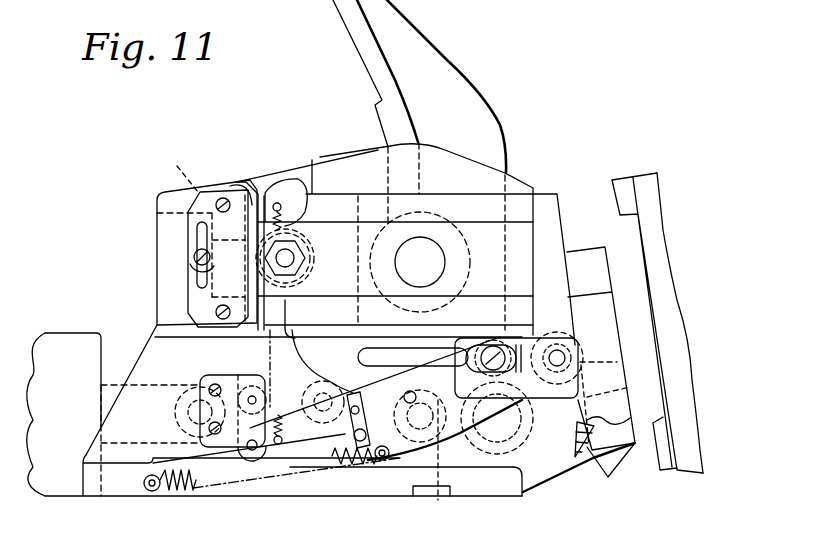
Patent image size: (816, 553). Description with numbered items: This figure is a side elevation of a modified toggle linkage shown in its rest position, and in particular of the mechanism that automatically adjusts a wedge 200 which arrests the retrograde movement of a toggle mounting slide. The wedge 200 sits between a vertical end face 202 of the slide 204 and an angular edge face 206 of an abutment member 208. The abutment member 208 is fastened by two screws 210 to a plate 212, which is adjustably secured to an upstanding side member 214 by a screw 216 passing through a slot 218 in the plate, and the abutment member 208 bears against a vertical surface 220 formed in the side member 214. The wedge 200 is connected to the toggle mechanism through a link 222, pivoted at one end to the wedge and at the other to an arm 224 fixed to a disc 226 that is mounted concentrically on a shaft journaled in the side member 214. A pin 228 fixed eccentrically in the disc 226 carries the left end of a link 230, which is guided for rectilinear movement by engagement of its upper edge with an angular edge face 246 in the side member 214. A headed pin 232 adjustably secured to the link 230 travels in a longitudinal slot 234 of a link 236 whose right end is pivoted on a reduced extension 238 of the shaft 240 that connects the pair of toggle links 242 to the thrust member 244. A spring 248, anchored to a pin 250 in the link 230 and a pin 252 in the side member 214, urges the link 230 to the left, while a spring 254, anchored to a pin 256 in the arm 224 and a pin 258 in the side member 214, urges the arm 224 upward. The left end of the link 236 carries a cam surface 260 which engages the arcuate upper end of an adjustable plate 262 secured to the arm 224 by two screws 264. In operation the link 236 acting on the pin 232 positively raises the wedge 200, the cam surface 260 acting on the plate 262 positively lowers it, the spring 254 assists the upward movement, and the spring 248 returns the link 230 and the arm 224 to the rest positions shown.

The wedge 200 is at (240, 357).
The vertical end face 202 is at (240, 180).
The slide 204 is at (338, 230).
The angular edge face 206 is at (200, 232).
The abutment member 208 is at (206, 300).
The screws 210 is at (223, 197).
The plate 212 is at (190, 285).
The side member 214 is at (372, 160).
The screw 216 is at (194, 260).
The slot 218 is at (198, 241).
The vertical surface 220 is at (174, 168).
The link 222 is at (180, 406).
The arm 224 is at (294, 447).
The disc 226 is at (467, 460).
The pin 228 is at (417, 417).
The link 230 is at (387, 461).
The headed pin 232 is at (488, 347).
The longitudinal slot 234 is at (420, 342).
The link 236 is at (420, 262).
The reduced extension 238 is at (558, 350).
The shaft 240 is at (598, 362).
The toggle links 242 is at (548, 470).
The thrust member 244 is at (622, 402).
The angular edge face 246 is at (527, 326).
The spring 248 is at (193, 488).
The pin 250 is at (345, 467).
The pin 252 is at (151, 493).
The spring 254 is at (313, 166).
The pin 256 is at (277, 443).
The pin 258 is at (287, 201).
The cam surface 260 is at (288, 337).
The adjustable plate 262 is at (357, 392).
The screws 264 is at (348, 430).